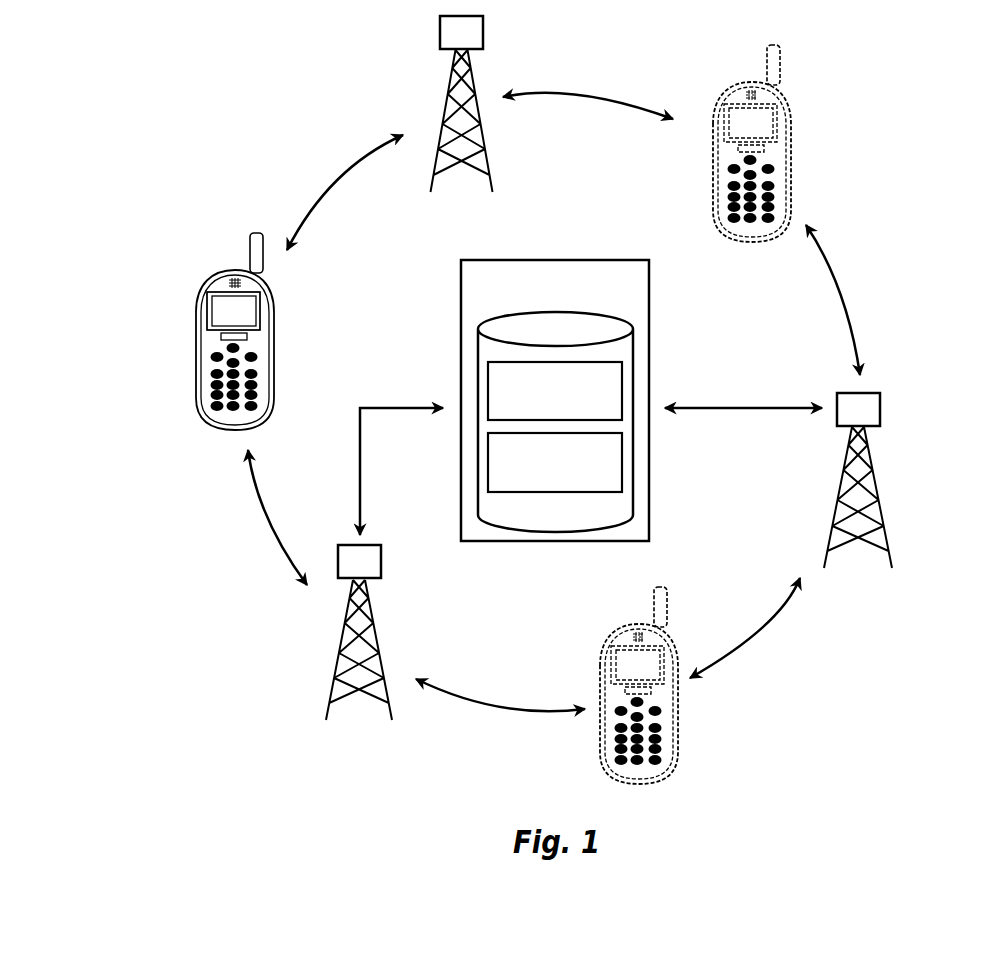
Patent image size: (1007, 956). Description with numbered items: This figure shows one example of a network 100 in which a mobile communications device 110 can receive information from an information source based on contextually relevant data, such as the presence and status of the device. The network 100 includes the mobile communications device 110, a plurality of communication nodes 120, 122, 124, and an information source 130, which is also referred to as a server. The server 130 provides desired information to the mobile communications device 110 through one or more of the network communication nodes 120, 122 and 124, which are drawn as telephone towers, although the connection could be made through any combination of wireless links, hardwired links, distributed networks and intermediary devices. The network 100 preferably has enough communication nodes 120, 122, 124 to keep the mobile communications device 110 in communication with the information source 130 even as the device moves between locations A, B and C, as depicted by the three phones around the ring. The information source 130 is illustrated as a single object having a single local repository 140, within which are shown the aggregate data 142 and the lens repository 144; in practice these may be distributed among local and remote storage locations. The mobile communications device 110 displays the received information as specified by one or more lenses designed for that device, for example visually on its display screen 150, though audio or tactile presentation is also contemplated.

The network 100 is at (178, 113).
The mobile communications device 110 is at (178, 378).
The communication node 120 is at (445, 102).
The communication node 122 is at (876, 460).
The communication node 124 is at (338, 665).
The information source 130 is at (602, 293).
The local repository 140 is at (570, 338).
The aggregate data 142 is at (595, 413).
The lens repository 144 is at (597, 460).
The display screen 150 is at (218, 318).